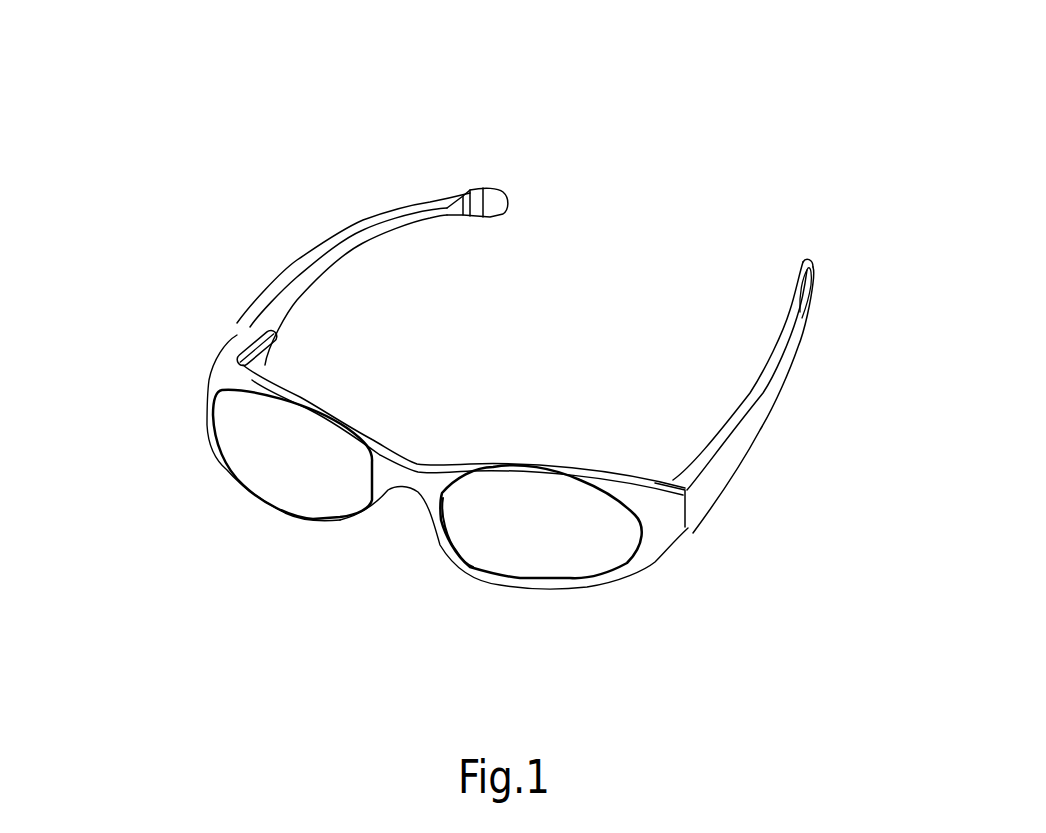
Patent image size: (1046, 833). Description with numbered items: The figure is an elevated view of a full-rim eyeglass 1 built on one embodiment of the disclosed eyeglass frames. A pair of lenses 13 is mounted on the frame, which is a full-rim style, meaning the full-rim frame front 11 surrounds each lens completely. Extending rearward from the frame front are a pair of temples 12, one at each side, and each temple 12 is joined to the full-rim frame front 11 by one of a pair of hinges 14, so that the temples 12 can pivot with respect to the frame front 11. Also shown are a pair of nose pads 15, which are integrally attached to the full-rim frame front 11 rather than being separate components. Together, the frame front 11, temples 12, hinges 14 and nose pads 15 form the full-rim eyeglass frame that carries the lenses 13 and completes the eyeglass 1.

The full-rim eyeglass 1 is at (347, 210).
The full-rim frame front 11 is at (674, 539).
The temples 12 is at (777, 427).
The lenses 13 is at (288, 478).
The hinges 14 is at (240, 333).
The nose pads 15 is at (468, 499).